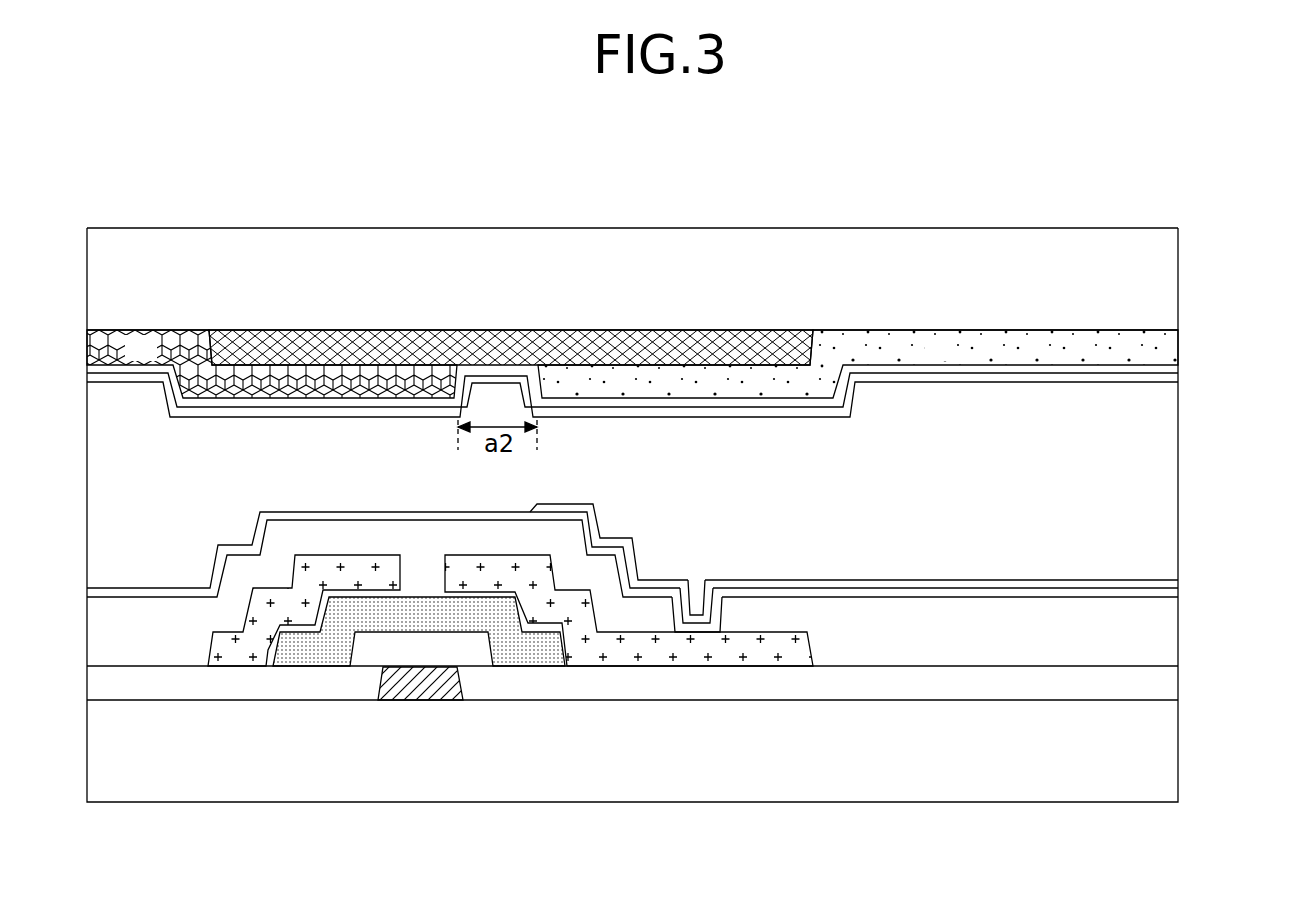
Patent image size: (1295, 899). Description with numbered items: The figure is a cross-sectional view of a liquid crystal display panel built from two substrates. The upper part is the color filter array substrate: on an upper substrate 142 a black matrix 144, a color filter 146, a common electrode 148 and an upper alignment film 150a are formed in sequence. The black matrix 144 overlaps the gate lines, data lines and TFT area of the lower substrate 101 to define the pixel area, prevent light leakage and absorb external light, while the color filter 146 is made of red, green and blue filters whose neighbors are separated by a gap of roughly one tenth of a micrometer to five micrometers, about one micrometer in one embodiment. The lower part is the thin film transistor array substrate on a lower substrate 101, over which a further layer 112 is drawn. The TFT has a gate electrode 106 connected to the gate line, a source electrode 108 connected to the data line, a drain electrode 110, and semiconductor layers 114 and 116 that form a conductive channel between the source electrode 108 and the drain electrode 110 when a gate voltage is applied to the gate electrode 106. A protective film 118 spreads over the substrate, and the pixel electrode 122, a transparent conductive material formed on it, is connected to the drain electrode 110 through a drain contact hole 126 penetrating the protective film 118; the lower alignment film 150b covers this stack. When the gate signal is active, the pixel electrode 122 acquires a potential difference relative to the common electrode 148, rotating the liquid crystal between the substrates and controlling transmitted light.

The lower substrate 101 is at (1170, 737).
The gate electrode 106 is at (435, 690).
The source electrode 108 is at (344, 566).
The drain electrode 110 is at (475, 573).
The gate insulating layer 112 is at (1170, 684).
The semiconductor layer 114 is at (332, 656).
The semiconductor layer 116 is at (548, 628).
The protective film 118 is at (1170, 643).
The pixel electrode 122 is at (1172, 595).
The drain contact hole 126 is at (698, 587).
The upper substrate 142 is at (1170, 273).
The black matrix 144 is at (467, 335).
The color filter 146 is at (1170, 343).
The common electrode 148 is at (1170, 374).
The upper alignment film 150a is at (1172, 381).
The lower alignment film 150b is at (1170, 583).